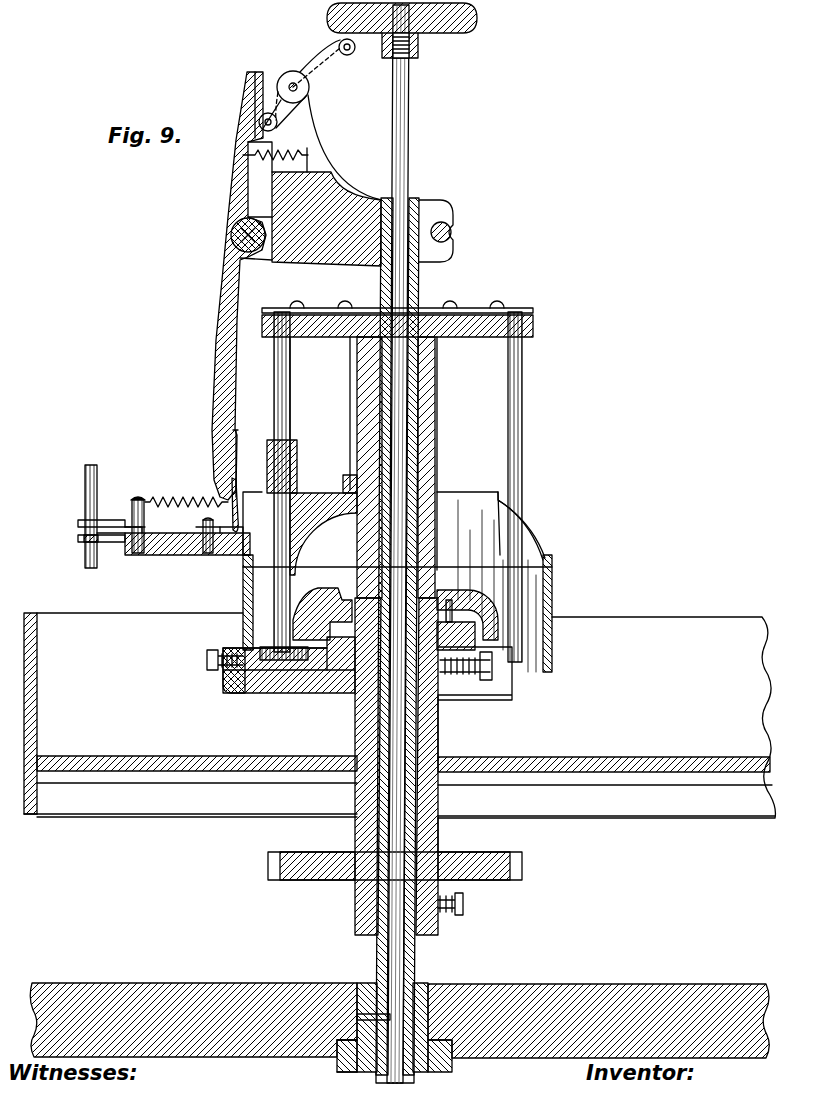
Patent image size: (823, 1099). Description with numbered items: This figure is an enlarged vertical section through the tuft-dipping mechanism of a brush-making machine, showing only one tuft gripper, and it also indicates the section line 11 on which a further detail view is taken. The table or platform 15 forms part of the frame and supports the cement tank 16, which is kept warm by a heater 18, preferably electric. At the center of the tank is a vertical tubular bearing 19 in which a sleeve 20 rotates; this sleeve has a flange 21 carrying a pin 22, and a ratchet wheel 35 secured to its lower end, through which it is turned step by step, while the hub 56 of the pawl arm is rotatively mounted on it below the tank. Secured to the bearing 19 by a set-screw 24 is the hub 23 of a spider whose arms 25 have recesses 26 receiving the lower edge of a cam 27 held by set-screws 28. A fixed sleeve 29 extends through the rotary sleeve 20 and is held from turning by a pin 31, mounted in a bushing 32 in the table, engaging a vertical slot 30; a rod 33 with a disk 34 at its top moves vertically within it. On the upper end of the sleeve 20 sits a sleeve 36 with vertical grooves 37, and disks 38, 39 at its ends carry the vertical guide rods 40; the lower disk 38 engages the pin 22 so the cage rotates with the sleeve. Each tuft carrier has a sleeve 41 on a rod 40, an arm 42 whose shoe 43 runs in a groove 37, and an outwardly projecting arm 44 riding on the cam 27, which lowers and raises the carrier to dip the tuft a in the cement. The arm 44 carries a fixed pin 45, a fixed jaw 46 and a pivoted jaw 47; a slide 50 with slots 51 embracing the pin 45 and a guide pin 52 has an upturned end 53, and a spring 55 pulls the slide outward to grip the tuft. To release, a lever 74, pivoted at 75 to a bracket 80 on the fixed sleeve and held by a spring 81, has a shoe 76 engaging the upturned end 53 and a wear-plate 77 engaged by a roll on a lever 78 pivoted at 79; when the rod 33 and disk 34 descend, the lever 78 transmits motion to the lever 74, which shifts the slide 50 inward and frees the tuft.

The tuft a is at (84, 488).
The cylinder casing 11 is at (243, 572).
The table or platform 15 is at (700, 987).
The cement tank 16 is at (688, 615).
The heater 18 is at (207, 788).
The vertical tubular bearing 19 is at (440, 718).
The sleeve 20 is at (430, 383).
The flange 21 is at (438, 628).
The pin 22 is at (450, 600).
The hub 23 is at (458, 695).
The set-screw 24 is at (490, 670).
The arms 25 is at (285, 693).
The recesses 26 is at (222, 680).
The cam 27 is at (466, 492).
The set-screws 28 is at (208, 655).
The fixed sleeve 29 is at (420, 275).
The vertical slot 30 is at (380, 1072).
The pin 31 is at (368, 988).
The bushing 32 is at (343, 1062).
The rod 33 is at (410, 115).
The disk 34 is at (450, 33).
The ratchet wheel 35 is at (500, 880).
The sleeve 36 is at (438, 410).
The vertical grooves 37 is at (350, 402).
The lower disk 38 is at (330, 598).
The upper disk 39 is at (470, 338).
The vertical guide rods 40 is at (290, 360).
The sleeve of tuft carrier 41 is at (297, 458).
The arm 42 is at (328, 518).
The shoe 43 is at (343, 484).
The outwardly projecting arm 44 is at (188, 555).
The fixed pin 45 is at (135, 558).
The fixed jaw 46 is at (110, 550).
The jaw 47 is at (80, 538).
The slide 50 is at (84, 540).
The slots 51 is at (135, 505).
The guide pin 52 is at (205, 560).
The upturned end 53 is at (236, 485).
The spring 55 is at (176, 495).
The hub 56 is at (440, 828).
The lever 74 is at (218, 305).
The pivot 75 is at (232, 233).
The wear-plate or shoe 76 is at (240, 430).
The wear-plate 77 is at (266, 80).
The lever 78 is at (330, 90).
The pivot 79 is at (294, 82).
The bracket 80 is at (330, 190).
The spring 81 is at (312, 150).